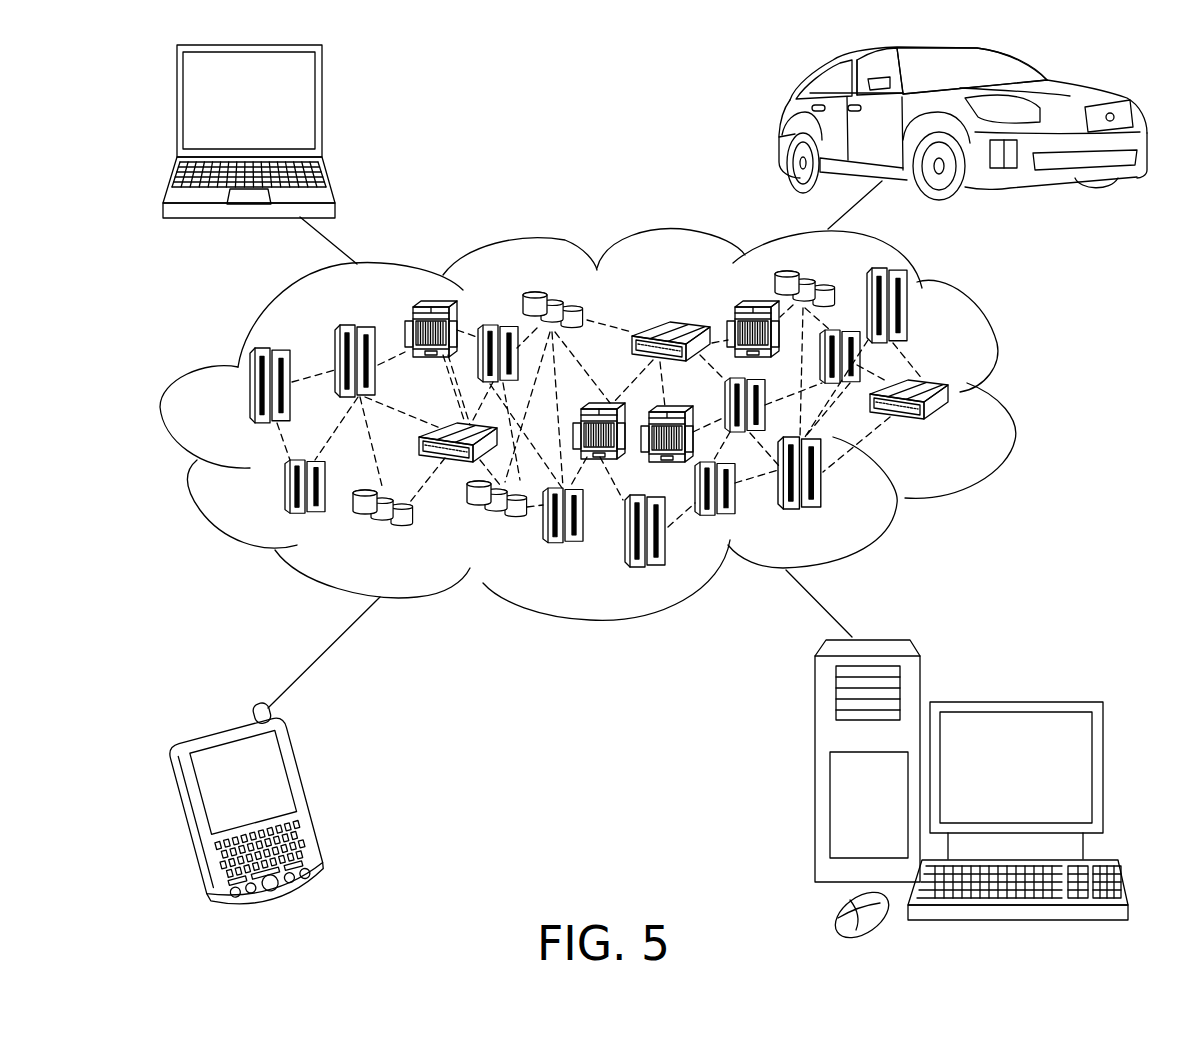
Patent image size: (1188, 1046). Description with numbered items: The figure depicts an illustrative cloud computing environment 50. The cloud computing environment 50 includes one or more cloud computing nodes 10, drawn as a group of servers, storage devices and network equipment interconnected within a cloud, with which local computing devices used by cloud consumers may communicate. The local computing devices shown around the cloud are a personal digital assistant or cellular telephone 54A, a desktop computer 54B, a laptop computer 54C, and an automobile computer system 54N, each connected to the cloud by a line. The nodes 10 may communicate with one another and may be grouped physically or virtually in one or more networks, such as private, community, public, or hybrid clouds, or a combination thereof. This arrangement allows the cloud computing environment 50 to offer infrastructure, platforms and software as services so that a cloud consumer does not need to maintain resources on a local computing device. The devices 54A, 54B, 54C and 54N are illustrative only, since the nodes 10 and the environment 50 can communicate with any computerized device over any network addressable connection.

The personal digital assistant (PDA) or cellular telephone 54A is at (310, 800).
The desktop computer 54B is at (1013, 701).
The laptop computer 54C is at (322, 108).
The automobile computer system 54N is at (782, 127).
The cloud computing environment 50 is at (1007, 396).
The cloud computing nodes 10 is at (950, 428).